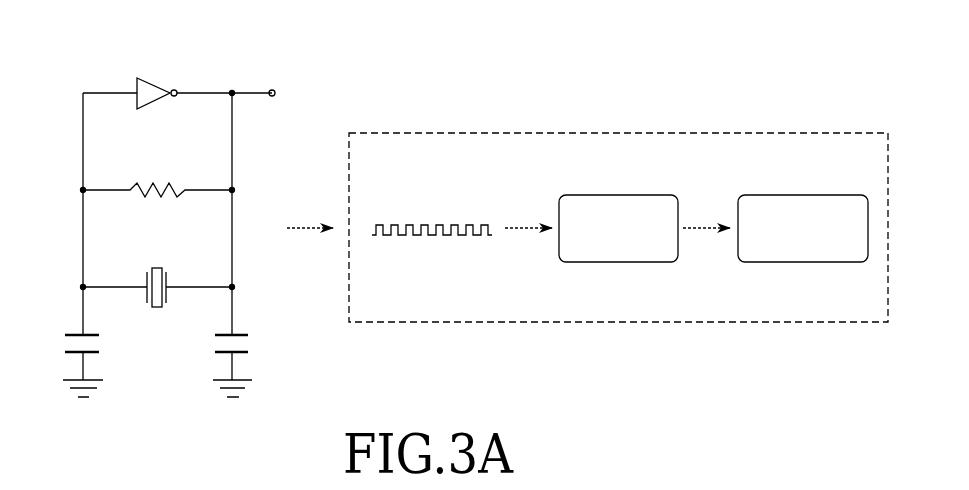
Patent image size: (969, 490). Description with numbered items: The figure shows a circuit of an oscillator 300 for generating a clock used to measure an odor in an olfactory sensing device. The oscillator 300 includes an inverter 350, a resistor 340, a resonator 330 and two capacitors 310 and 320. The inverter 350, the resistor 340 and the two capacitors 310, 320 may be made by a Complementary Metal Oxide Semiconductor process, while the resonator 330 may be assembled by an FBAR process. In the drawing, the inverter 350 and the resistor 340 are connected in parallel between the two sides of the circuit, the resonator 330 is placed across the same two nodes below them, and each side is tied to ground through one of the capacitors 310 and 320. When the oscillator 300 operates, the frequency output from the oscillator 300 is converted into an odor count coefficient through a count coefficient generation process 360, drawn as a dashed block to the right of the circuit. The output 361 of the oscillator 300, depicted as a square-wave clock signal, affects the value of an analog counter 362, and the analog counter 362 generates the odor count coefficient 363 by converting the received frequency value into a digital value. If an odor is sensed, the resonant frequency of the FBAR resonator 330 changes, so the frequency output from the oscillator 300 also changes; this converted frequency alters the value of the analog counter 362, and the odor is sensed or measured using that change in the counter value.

The oscillator 300 is at (250, 57).
The capacitor 310 is at (92, 344).
The capacitor 320 is at (220, 344).
The resonator 330 is at (167, 270).
The resistor 340 is at (165, 185).
The inverter 350 is at (158, 88).
The count coefficient generation process 360 is at (617, 133).
The output of the oscillator 361 is at (443, 218).
The analog counter 362 is at (623, 195).
The odor count coefficient 363 is at (808, 195).